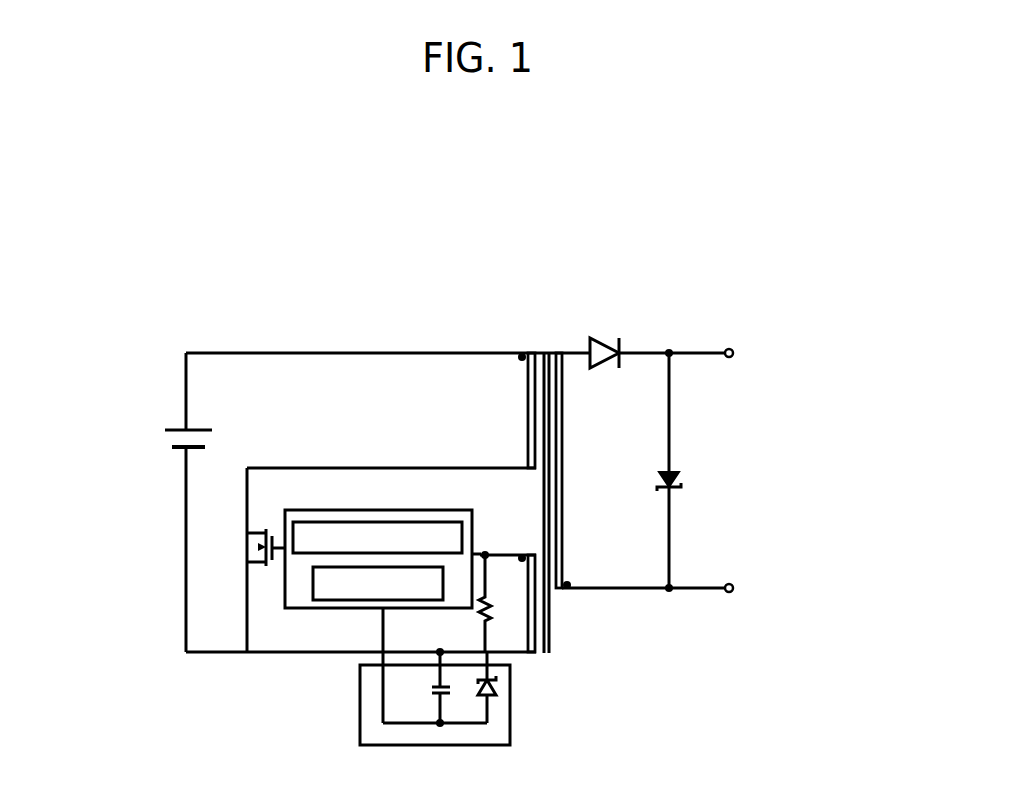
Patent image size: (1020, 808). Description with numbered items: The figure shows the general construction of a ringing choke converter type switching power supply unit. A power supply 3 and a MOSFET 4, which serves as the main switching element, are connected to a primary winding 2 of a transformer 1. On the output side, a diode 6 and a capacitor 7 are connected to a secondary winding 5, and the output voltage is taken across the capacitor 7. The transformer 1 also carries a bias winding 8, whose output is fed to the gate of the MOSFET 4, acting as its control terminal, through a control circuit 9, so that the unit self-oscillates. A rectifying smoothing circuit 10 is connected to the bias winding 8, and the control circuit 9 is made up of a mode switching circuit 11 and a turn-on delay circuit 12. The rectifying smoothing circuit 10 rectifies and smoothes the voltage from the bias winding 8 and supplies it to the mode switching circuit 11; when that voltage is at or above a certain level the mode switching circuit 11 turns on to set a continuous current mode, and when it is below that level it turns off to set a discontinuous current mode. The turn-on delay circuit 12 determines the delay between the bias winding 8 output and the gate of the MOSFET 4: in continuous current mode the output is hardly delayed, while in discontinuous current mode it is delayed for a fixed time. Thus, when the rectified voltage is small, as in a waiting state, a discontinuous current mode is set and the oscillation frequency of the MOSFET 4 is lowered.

The transformer 1 is at (545, 347).
The primary winding 2 is at (529, 348).
The power supply 3 is at (164, 427).
The MOSFET 4 is at (245, 562).
The secondary winding 5 is at (560, 347).
The diode 6 is at (603, 339).
The capacitor 7 is at (687, 480).
The bias winding 8 is at (532, 548).
The control circuit 9 is at (389, 507).
The rectifying smoothing circuit 10 is at (510, 697).
The mode switching circuit 11 is at (338, 588).
The turn-on delay circuit 12 is at (332, 533).